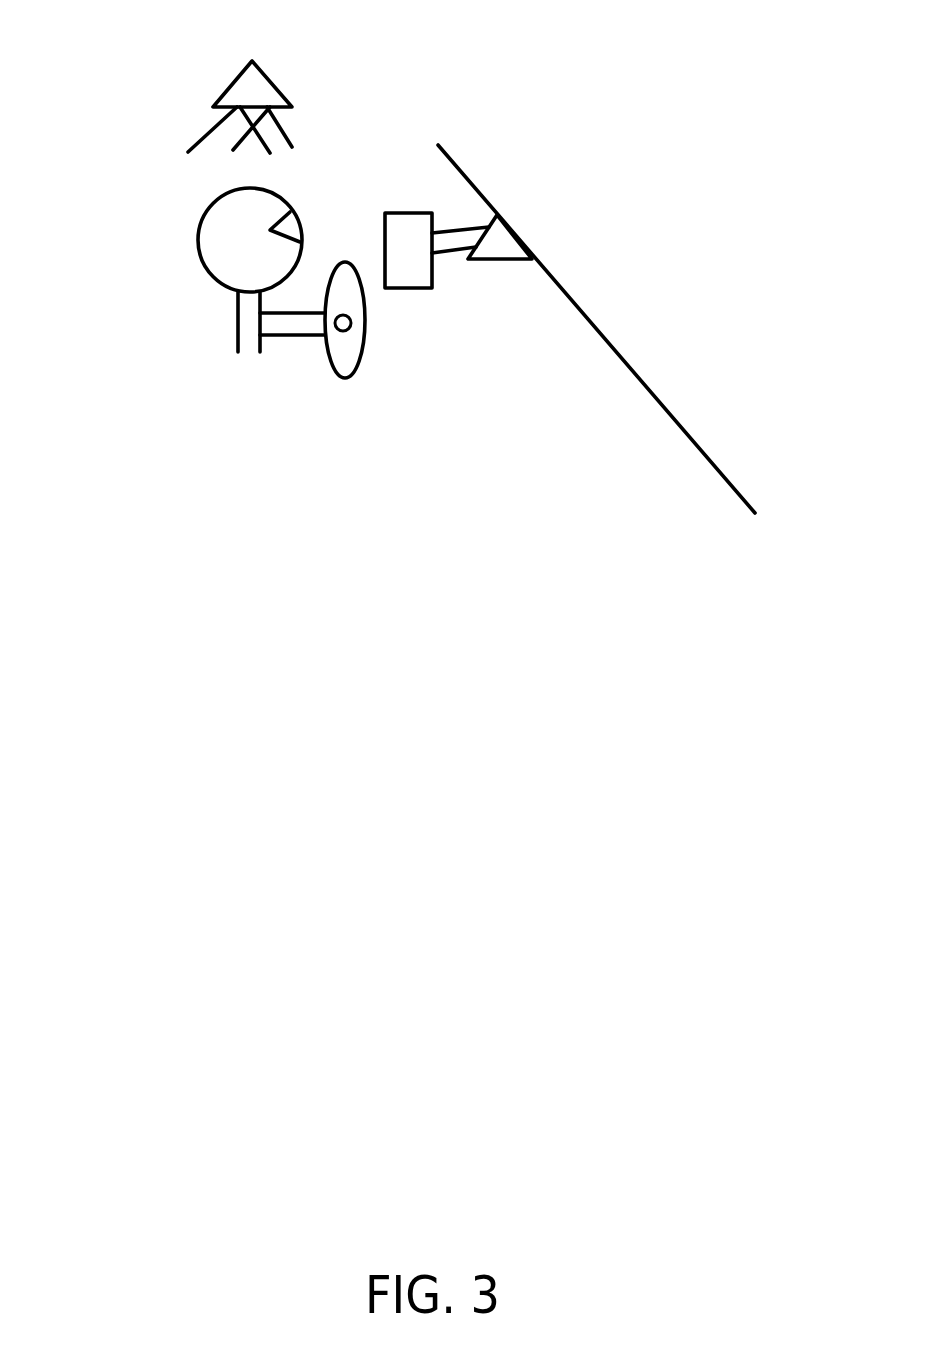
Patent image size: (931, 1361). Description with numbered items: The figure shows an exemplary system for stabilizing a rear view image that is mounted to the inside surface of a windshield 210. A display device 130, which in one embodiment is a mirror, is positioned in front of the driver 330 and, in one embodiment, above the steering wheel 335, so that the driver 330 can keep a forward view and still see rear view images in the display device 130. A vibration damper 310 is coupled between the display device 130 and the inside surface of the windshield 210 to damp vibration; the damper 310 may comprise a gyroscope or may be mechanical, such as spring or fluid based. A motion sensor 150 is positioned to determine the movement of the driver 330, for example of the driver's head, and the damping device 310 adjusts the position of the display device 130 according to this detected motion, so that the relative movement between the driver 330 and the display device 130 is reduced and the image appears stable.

The motion sensor 150 is at (268, 67).
The driver 330 is at (200, 257).
The steering wheel 335 is at (342, 353).
The display device 130 is at (410, 267).
The vibration damper 310 is at (500, 238).
The windshield 210 is at (643, 373).